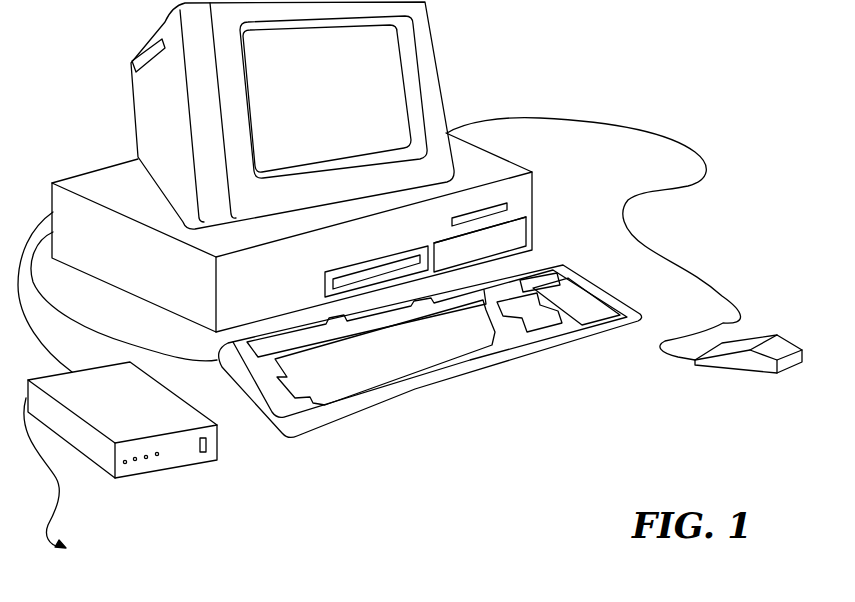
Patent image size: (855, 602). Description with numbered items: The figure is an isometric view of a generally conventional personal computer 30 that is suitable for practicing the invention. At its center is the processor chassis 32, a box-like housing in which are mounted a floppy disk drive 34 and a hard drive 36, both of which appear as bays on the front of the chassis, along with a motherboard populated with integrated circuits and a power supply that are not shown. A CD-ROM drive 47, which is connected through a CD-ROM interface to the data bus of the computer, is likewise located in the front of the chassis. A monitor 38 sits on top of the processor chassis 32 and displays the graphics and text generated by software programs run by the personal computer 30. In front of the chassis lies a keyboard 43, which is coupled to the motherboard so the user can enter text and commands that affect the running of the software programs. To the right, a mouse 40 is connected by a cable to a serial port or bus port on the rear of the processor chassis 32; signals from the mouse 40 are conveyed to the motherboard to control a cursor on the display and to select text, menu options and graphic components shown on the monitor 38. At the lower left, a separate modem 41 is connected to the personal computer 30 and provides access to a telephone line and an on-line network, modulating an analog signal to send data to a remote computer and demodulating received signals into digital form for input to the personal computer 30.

The personal computer 30 is at (442, 400).
The processor chassis 32 is at (503, 211).
The floppy disk drive 34 is at (490, 204).
The hard drive 36 is at (502, 236).
The monitor 38 is at (436, 53).
The mouse 40 is at (778, 373).
The modem 41 is at (177, 463).
The keyboard 43 is at (528, 358).
The CD-ROM drive 47 is at (325, 285).